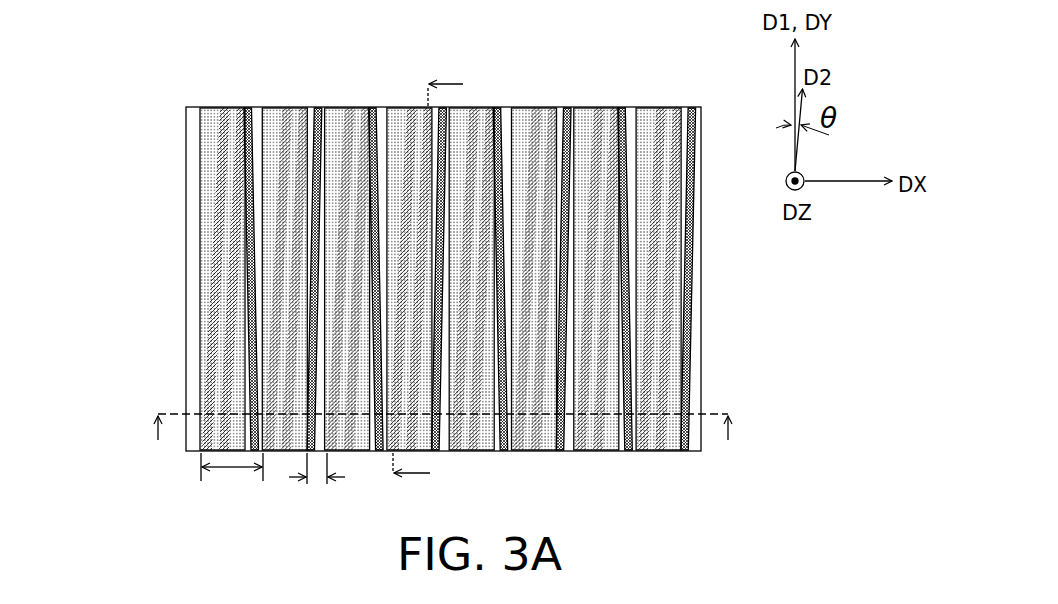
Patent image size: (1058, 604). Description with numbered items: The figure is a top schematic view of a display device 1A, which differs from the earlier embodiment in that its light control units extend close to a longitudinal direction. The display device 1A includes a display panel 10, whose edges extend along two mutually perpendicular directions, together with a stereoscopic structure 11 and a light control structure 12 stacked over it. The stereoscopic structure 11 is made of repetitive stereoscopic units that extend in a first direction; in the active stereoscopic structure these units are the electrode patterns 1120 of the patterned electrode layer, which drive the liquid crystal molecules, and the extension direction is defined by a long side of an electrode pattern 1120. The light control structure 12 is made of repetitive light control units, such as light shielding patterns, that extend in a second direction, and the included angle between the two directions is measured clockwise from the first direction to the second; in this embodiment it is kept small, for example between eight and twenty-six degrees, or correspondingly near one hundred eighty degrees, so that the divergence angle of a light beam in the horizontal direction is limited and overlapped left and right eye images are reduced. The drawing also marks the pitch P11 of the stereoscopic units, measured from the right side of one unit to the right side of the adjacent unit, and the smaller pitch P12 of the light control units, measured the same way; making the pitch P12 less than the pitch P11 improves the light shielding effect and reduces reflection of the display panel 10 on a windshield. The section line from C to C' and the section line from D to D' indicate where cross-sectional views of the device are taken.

The display panel 10 is at (196, 106).
The stereoscopic structure 11 is at (372, 277).
The electrode pattern 1120 is at (202, 152).
The light control structure 12 is at (247, 107).
The display device 1A is at (824, 516).
The pitch of the stereoscopic units P11 is at (232, 480).
The pitch of the light control units P12 is at (317, 483).
The section line D-D' endpoint D is at (421, 470).
The section line D-D' endpoint D' is at (457, 89).
The section line C-C' endpoint C is at (439, 439).
The section line C-C' endpoint C' is at (728, 441).